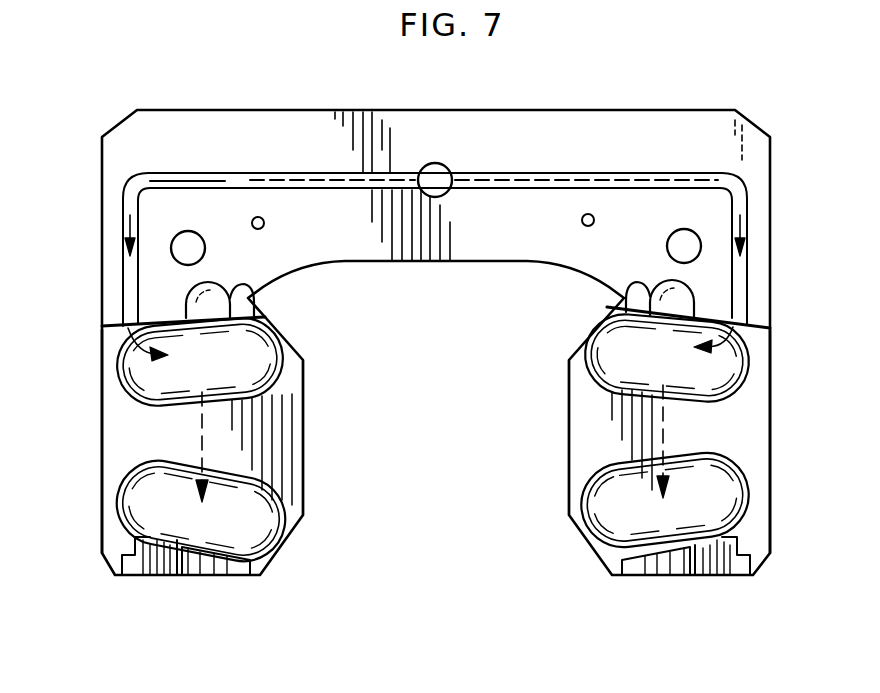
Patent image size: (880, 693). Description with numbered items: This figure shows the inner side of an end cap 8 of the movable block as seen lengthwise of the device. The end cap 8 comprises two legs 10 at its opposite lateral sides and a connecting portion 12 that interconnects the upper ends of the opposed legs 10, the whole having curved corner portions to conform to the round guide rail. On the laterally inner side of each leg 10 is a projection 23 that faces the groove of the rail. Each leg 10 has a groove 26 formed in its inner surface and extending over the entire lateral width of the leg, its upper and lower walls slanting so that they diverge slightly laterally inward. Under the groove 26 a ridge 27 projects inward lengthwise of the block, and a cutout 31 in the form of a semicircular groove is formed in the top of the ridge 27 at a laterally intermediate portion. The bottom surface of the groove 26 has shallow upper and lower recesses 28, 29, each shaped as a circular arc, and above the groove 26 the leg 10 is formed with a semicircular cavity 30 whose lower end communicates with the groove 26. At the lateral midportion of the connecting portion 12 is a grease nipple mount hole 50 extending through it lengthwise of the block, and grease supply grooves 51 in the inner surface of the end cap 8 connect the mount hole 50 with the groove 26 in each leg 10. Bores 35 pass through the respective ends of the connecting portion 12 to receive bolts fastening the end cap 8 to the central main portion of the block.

The end cap 8 is at (772, 137).
The leg 10 is at (102, 492).
The connecting portion 12 is at (575, 125).
The projection 23 is at (287, 430).
The groove 26 is at (118, 430).
The ridge 27 is at (160, 577).
The upper recess 28 is at (122, 370).
The lower recess 29 is at (130, 515).
The semicircular cavity 30 is at (262, 288).
The cutout 31 is at (207, 577).
The bore 35 is at (182, 248).
The grease nipple mount hole 50 is at (437, 172).
The grease supply groove 51 is at (283, 178).